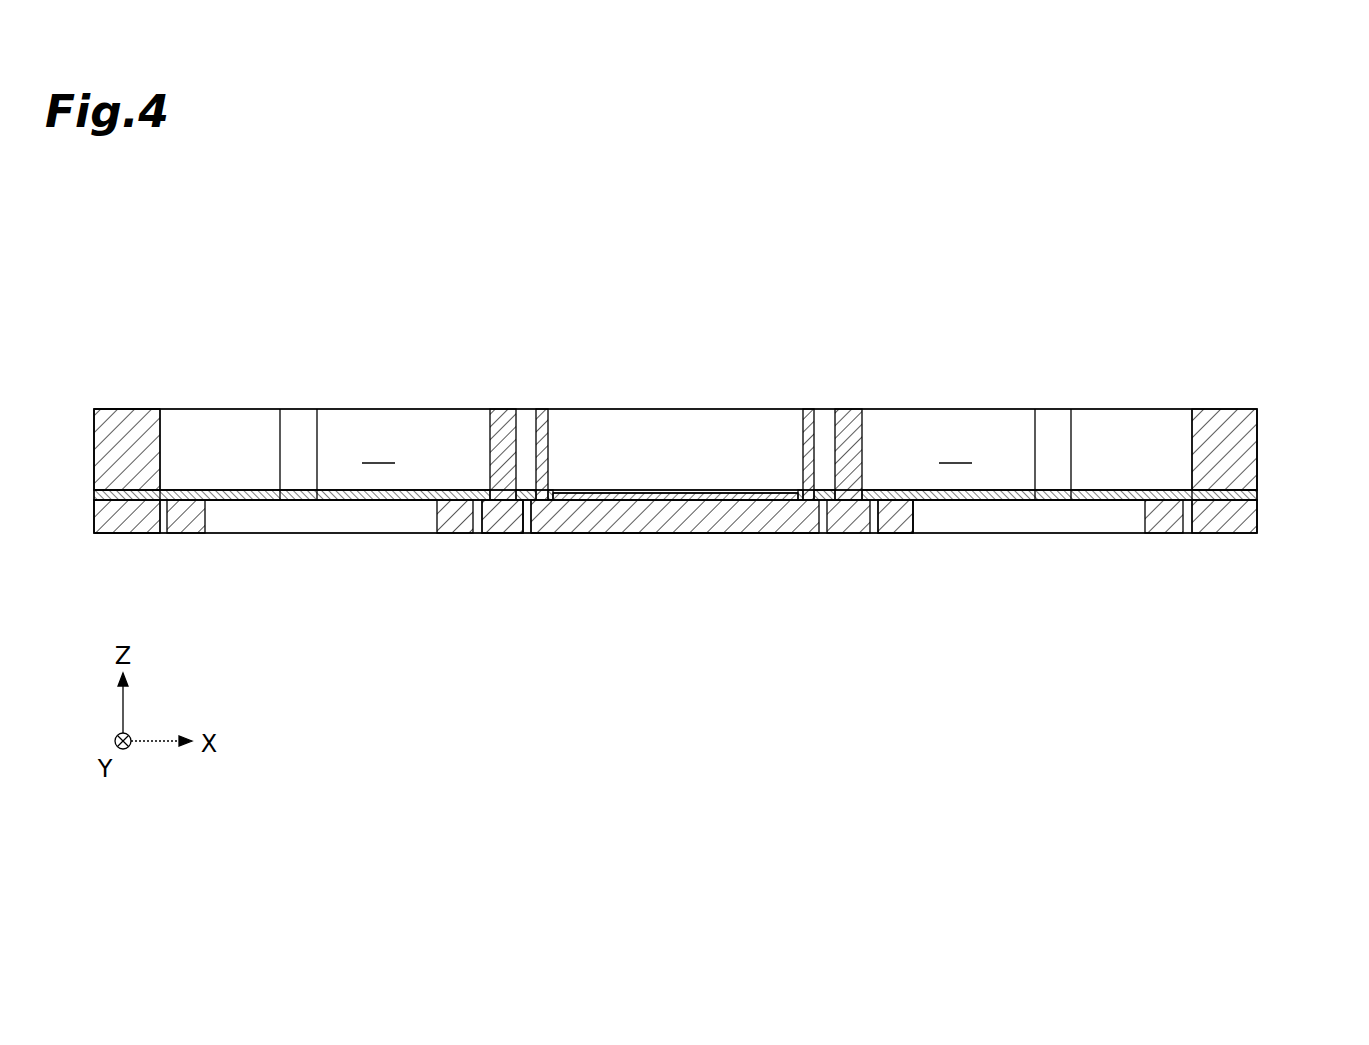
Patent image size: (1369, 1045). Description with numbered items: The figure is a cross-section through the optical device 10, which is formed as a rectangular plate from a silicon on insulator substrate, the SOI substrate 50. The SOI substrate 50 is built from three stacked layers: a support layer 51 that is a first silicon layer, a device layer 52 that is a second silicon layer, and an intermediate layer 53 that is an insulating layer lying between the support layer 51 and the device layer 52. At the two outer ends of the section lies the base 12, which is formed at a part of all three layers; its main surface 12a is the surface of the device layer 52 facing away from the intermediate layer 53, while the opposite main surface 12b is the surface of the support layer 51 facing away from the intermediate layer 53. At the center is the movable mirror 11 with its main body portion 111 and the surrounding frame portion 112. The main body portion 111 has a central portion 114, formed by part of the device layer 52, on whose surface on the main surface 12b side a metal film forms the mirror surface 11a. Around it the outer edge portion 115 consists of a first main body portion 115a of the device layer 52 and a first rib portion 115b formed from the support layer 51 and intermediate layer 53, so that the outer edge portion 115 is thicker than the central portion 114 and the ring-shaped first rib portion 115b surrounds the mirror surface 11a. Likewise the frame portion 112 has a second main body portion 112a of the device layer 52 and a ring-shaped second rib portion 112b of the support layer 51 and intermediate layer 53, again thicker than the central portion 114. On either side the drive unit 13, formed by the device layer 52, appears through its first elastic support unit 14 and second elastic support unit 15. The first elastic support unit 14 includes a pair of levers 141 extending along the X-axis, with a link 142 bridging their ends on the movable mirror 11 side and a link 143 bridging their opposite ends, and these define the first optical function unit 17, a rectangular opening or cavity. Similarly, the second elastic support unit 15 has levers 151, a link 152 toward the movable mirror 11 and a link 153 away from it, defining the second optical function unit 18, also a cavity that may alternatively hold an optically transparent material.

The optical device 10 is at (1102, 409).
The movable mirror 11 is at (585, 533).
The mirror surface 11a is at (654, 492).
The main body portion 111 is at (676, 524).
The frame portion 112 is at (836, 522).
The second main body portion 112a is at (868, 522).
The second rib portion 112b is at (845, 418).
The central portion 114 is at (637, 522).
The outer edge portion 115 is at (812, 522).
The first main body portion 115a is at (552, 535).
The first rib portion 115b is at (543, 409).
The base 12 is at (96, 447).
The main surface 12a is at (116, 533).
The main surface 12b is at (110, 409).
The drive unit 13 is at (677, 556).
The first elastic support unit 14 is at (903, 522).
The lever 141 is at (1032, 522).
The link 142 is at (900, 519).
The link 143 is at (1168, 522).
The second elastic support unit 15 is at (460, 527).
The lever 151 is at (322, 520).
The link 152 is at (442, 513).
The link 153 is at (192, 518).
The first optical function unit 17 is at (1004, 454).
The second optical function unit 18 is at (337, 454).
The SOI substrate 50 is at (1314, 445).
The support layer 51 is at (1250, 465).
The device layer 52 is at (1250, 523).
The intermediate layer 53 is at (1250, 494).